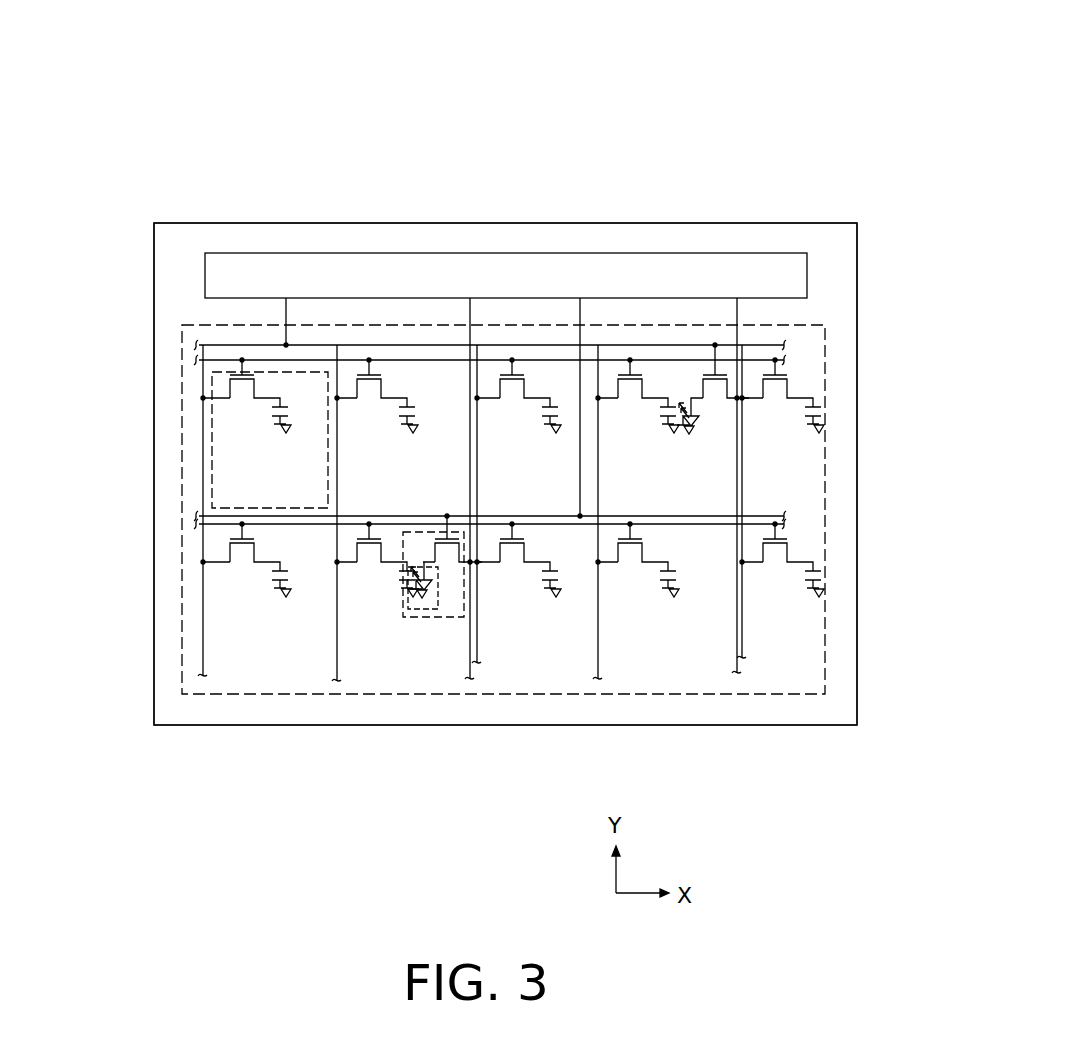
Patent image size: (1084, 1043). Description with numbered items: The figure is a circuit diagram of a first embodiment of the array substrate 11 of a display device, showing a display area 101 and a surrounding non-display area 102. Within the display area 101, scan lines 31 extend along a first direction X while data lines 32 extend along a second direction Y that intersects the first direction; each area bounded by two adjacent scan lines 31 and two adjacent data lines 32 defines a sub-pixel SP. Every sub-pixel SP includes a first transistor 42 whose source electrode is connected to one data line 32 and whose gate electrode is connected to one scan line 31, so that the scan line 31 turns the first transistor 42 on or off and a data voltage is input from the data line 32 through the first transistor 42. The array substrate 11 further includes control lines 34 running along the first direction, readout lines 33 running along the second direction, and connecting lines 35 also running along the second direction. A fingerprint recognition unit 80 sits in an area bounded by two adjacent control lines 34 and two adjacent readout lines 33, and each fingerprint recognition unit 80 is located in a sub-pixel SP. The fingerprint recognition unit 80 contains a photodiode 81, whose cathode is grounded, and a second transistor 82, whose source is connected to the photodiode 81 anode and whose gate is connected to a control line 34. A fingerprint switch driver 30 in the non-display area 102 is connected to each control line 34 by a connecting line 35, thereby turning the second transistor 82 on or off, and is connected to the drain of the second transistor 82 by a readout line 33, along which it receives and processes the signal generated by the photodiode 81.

The array substrate 11 is at (499, 76).
The fingerprint switch driver 30 is at (762, 273).
The scan line 31 is at (765, 360).
The data line 32 is at (477, 352).
The readout line 33 is at (470, 310).
The control line 34 is at (768, 346).
The connecting line 35 is at (580, 317).
The first transistor 42 is at (214, 388).
The fingerprint recognition unit 80 is at (459, 659).
The photodiode 81 is at (438, 590).
The second transistor 82 is at (460, 548).
The display area 101 is at (182, 338).
The non-display area 102 is at (173, 262).
The sub-pixel SP is at (212, 478).